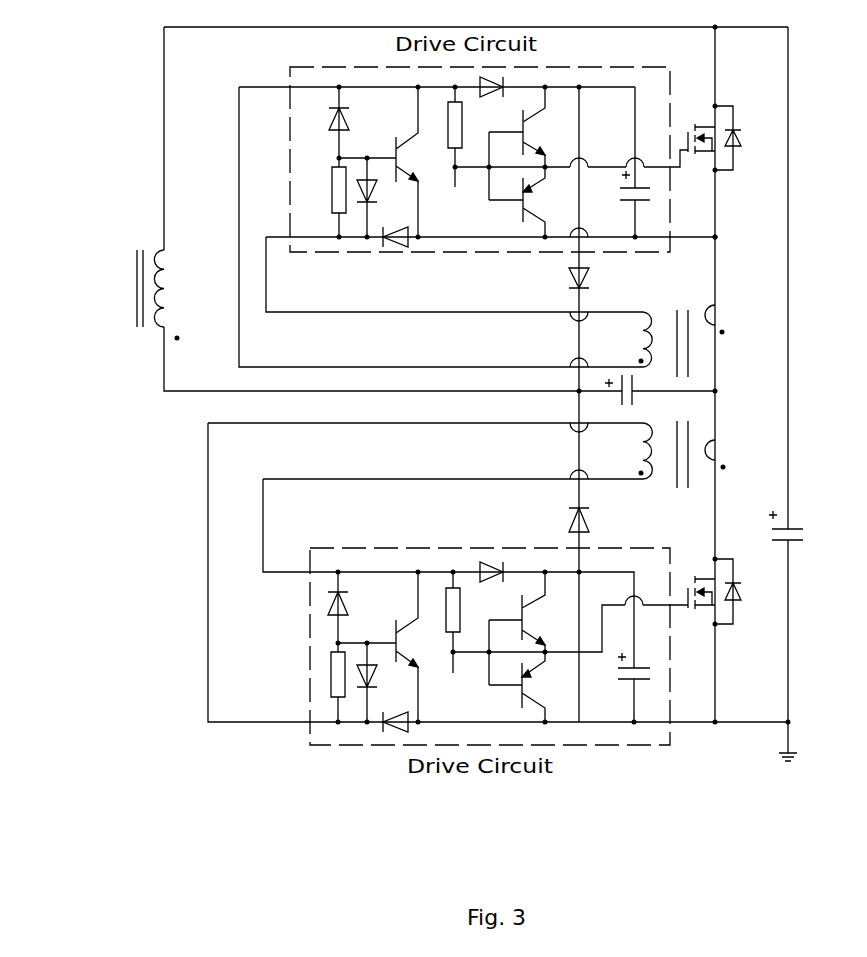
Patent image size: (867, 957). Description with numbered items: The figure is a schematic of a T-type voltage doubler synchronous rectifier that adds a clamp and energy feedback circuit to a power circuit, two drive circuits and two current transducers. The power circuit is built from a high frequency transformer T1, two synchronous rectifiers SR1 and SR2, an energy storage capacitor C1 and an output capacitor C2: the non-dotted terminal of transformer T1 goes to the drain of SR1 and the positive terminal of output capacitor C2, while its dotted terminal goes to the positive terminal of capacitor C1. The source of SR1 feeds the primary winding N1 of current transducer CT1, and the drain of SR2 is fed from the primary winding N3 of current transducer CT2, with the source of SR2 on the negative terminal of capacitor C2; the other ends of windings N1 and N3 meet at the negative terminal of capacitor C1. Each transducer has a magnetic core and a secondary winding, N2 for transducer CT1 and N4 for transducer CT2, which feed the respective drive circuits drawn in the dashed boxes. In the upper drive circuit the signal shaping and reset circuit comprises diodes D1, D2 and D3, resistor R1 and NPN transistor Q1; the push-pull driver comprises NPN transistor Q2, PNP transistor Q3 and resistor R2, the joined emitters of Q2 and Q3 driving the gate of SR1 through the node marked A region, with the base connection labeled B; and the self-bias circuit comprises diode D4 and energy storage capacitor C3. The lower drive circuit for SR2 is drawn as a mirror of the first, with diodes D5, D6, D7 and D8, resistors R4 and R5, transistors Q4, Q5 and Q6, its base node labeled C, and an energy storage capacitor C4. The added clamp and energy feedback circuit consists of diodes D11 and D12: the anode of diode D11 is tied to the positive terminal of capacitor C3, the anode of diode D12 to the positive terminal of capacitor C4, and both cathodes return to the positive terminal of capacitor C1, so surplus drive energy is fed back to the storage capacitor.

The high frequency transformer T1 is at (95, 284).
The diode D1 is at (356, 122).
The diode D2 is at (367, 197).
The diode D3 is at (397, 225).
The diode D4 is at (492, 96).
The resistor R1 is at (326, 197).
The resistor R2 is at (442, 127).
The NPN transistor Q1 is at (418, 162).
The NPN transistor Q2 is at (521, 127).
The PNP transistor Q3 is at (518, 202).
The energy storage capacitor C3 is at (642, 162).
The synchronous rectifier SR1 is at (713, 151).
The node A is at (723, 238).
The node B is at (455, 188).
The node C is at (453, 675).
The diode D11 is at (566, 277).
The diode D12 is at (596, 520).
The secondary winding N2 is at (633, 339).
The primary winding N1 is at (723, 318).
The secondary winding N4 is at (633, 451).
The primary winding N3 is at (722, 450).
The current transducer CT1 is at (723, 343).
The current transducer CT2 is at (720, 462).
The energy storage capacitor C1 is at (618, 393).
The output capacitor C2 is at (796, 538).
The energy storage capacitor C4 is at (641, 678).
The diode D5 is at (356, 607).
The diode D6 is at (367, 682).
The diode D7 is at (397, 710).
The diode D8 is at (491, 582).
The resistor R4 is at (328, 682).
The resistor R5 is at (442, 612).
The transistor Q4 is at (417, 647).
The transistor Q5 is at (521, 612).
The transistor Q6 is at (519, 687).
The synchronous rectifier SR2 is at (712, 604).